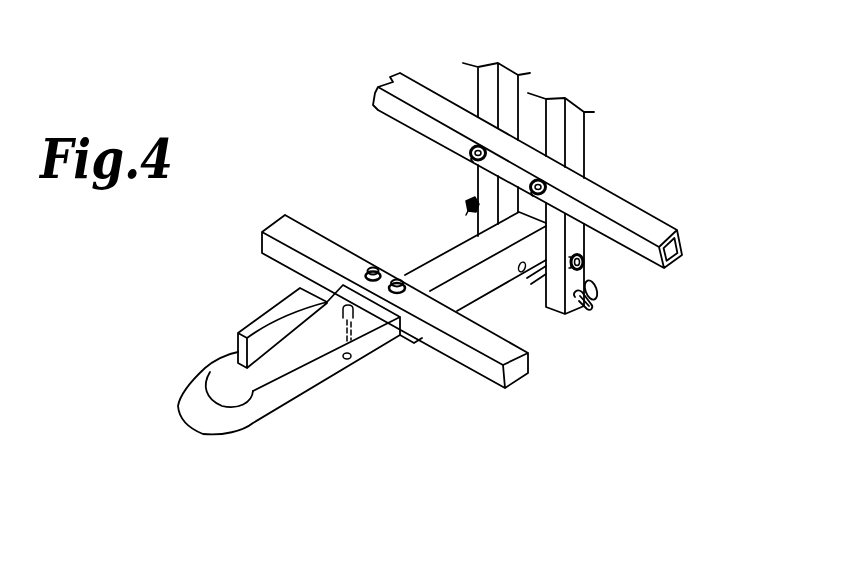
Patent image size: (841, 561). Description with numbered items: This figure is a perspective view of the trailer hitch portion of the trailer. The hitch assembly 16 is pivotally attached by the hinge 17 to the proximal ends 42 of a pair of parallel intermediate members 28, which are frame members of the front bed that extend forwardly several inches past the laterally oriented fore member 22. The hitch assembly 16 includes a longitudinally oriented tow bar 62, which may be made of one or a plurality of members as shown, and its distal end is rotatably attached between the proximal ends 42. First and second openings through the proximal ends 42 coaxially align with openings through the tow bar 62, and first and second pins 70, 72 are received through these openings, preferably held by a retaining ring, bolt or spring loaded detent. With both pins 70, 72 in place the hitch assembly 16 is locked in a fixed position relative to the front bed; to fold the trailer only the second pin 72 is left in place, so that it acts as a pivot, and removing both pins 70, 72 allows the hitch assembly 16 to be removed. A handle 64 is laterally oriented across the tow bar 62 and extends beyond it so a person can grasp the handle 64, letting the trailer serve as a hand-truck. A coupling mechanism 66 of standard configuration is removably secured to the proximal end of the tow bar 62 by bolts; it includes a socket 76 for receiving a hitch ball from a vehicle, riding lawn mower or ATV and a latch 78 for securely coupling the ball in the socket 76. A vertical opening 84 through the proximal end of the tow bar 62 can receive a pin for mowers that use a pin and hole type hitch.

The hitch assembly 16 is at (324, 155).
The hinge 17 is at (450, 216).
The fore member 22 is at (618, 190).
The intermediate members 28 is at (548, 99).
The proximal ends of the intermediate members 42 is at (575, 237).
The tow bar 62 is at (437, 258).
The handle 64 is at (478, 374).
The coupling mechanism 66 is at (290, 417).
The first pin 70 is at (585, 312).
The second pin 72 is at (596, 297).
The socket 76 is at (223, 396).
The latch 78 is at (238, 333).
The vertical opening 84 is at (350, 335).